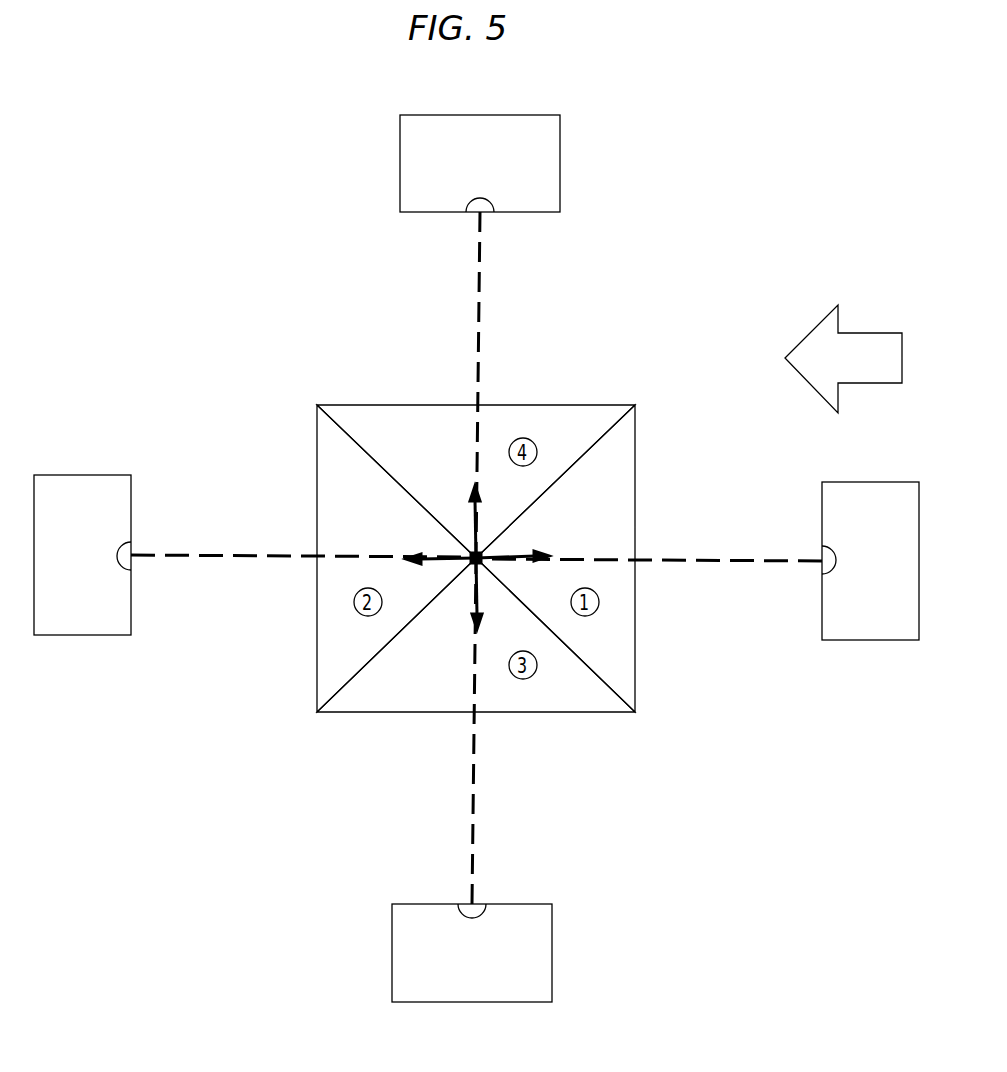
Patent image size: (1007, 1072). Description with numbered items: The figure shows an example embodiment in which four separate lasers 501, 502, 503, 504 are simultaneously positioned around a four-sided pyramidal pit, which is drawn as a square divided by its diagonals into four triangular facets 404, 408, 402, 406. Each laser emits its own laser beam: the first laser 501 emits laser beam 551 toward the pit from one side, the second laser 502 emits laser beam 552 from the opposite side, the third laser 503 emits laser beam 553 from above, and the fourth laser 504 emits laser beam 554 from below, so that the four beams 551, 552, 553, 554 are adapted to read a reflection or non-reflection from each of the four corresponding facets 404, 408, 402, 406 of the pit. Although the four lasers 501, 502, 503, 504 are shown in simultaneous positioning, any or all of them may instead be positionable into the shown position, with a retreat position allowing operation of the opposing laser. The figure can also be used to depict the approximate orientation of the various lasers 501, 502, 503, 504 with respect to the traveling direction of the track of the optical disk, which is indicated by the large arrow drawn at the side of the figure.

The facet 402 is at (580, 746).
The facet 404 is at (668, 482).
The facet 406 is at (570, 430).
The facet 408 is at (342, 642).
The laser 501 is at (88, 672).
The laser 502 is at (877, 686).
The laser 503 is at (597, 160).
The laser 504 is at (588, 950).
The laser beam 551 is at (213, 553).
The laser beam 552 is at (743, 603).
The laser beam 553 is at (478, 331).
The laser beam 554 is at (470, 818).